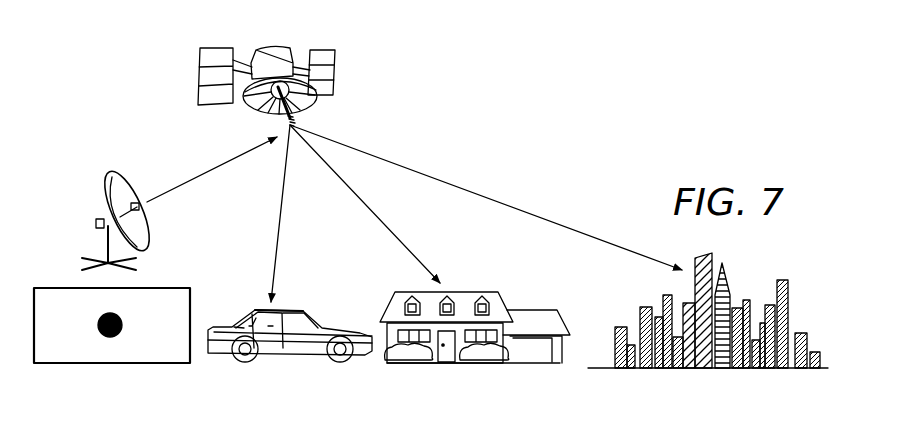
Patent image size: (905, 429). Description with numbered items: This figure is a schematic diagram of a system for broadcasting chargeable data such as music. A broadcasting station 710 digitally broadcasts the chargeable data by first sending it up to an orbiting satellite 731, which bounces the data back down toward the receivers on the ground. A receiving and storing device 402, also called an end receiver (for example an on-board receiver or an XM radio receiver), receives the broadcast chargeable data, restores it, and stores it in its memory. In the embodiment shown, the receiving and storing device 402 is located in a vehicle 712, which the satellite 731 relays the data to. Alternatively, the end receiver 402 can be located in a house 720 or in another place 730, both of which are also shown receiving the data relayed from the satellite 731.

The satellite 731 is at (340, 62).
The broadcasting station 710 is at (65, 302).
The receiving and storing device 402 is at (255, 311).
The vehicle 712 is at (290, 336).
The house 720 is at (520, 363).
The another place 730 is at (693, 257).